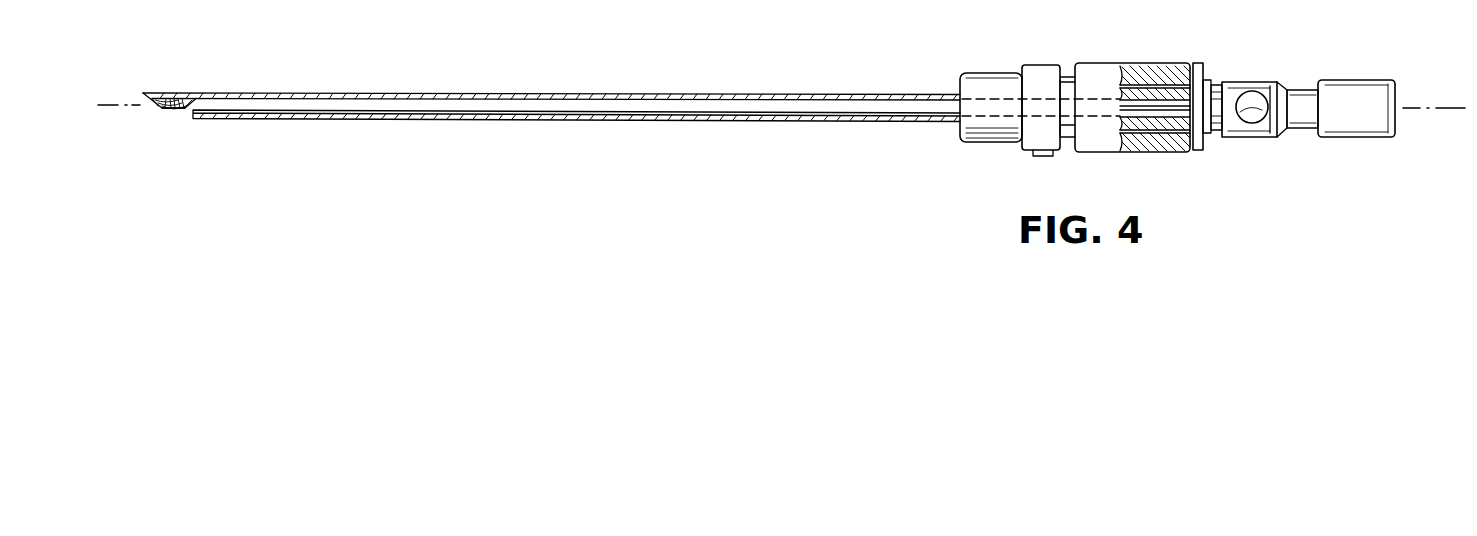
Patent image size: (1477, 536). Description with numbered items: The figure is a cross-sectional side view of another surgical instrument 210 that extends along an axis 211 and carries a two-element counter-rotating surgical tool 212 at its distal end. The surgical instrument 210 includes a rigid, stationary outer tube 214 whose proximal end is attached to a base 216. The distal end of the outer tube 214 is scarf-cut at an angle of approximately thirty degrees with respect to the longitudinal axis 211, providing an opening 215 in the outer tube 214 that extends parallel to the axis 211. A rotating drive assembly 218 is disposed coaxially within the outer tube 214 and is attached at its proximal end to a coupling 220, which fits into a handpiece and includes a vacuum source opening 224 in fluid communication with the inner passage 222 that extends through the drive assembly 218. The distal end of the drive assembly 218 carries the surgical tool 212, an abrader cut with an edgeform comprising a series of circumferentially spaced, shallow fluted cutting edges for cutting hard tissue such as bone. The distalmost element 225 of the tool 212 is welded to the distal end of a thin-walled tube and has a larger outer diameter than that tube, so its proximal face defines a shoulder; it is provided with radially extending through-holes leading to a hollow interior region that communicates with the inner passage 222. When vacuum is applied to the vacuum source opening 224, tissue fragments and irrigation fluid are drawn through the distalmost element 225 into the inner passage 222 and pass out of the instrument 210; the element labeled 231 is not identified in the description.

The surgical instrument 210 is at (870, 50).
The axis 211 is at (1445, 96).
The surgical tool 212 is at (168, 87).
The outer tube 214 is at (670, 94).
The opening 215 is at (172, 117).
The base 216 is at (1085, 64).
The drive assembly 218 is at (980, 97).
The coupling 220 is at (1270, 81).
The inner passage 222 is at (533, 102).
The vacuum source opening 224 is at (1250, 124).
The distalmost element 225 is at (160, 110).
The notch edge 231 is at (182, 110).